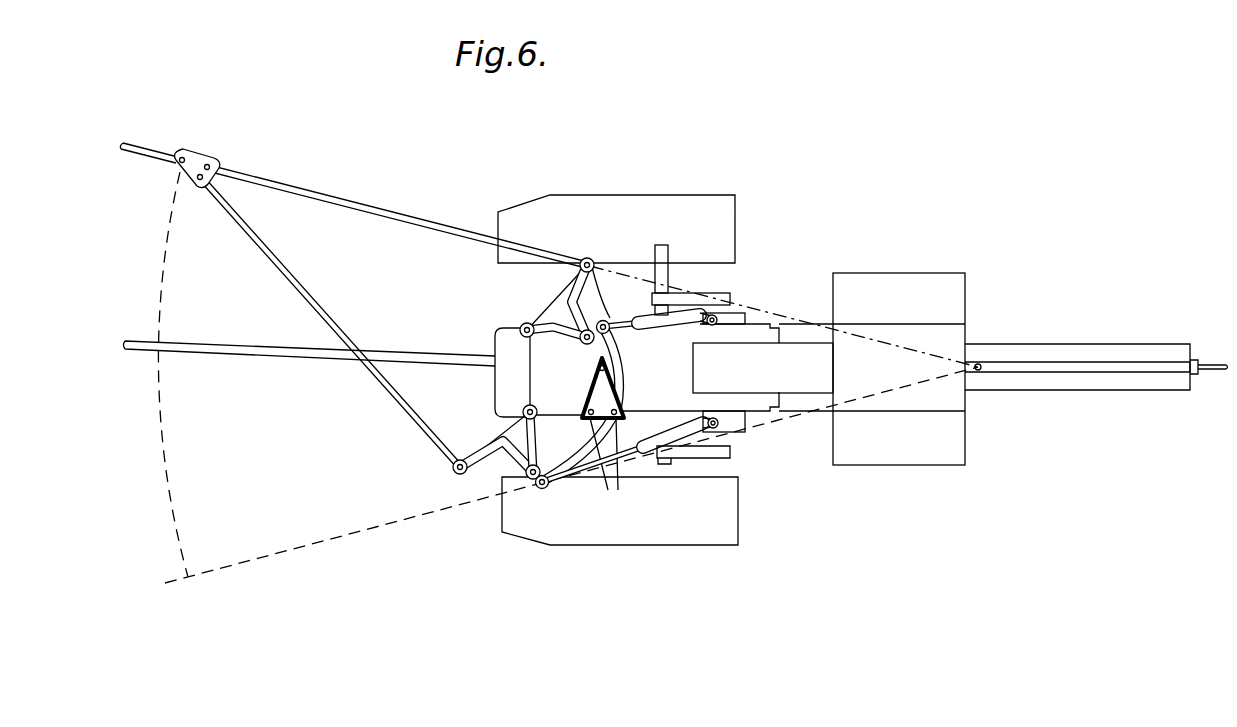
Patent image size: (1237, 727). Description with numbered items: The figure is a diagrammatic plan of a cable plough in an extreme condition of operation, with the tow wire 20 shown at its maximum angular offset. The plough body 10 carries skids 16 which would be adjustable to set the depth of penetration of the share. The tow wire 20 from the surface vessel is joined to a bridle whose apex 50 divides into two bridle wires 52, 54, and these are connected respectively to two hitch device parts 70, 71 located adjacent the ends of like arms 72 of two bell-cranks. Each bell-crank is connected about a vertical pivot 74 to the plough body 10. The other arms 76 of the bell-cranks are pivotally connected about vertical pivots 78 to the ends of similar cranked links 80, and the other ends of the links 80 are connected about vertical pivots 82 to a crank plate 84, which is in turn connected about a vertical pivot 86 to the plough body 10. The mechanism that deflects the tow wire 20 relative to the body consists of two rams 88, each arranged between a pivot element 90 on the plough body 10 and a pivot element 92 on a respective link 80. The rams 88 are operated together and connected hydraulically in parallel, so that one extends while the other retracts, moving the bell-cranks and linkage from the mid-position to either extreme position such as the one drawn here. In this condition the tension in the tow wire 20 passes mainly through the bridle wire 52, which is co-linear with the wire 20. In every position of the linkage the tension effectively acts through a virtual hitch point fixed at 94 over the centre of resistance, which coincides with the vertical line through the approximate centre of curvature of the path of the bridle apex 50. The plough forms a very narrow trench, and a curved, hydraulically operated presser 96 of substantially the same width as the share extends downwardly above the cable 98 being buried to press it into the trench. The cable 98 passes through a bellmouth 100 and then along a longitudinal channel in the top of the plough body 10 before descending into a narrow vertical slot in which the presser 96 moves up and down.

The plough body 10 is at (757, 333).
The skids 16 is at (650, 196).
The tow wire 20 is at (150, 148).
The bridle apex 50 is at (200, 155).
The bridle wire 52 is at (312, 190).
The bridle wire 54 is at (307, 296).
The hitch device part 70 is at (586, 257).
The hitch device part 71 is at (454, 471).
The bell-crank arms 72 is at (563, 290).
The vertical pivot 74 is at (524, 322).
The bell-crank arms 76 is at (592, 280).
The vertical pivot 78 is at (580, 340).
The cranked link 80 is at (616, 356).
The vertical pivot 82 is at (612, 469).
The crank plate 84 is at (594, 387).
The vertical pivot 86 is at (611, 368).
The ram 88 is at (675, 320).
The pivot element 90 is at (714, 316).
The pivot element 92 is at (605, 321).
The virtual hitch point 94 is at (980, 362).
The presser 96 is at (1040, 362).
The cable 98 is at (203, 340).
The bellmouth 100 is at (497, 343).